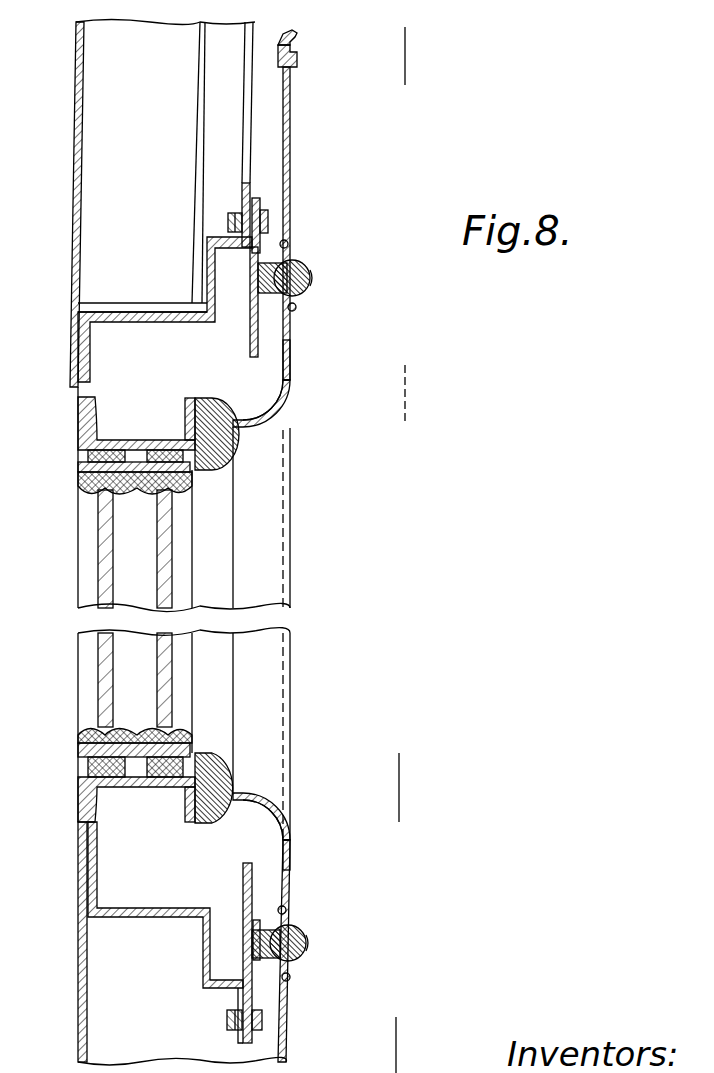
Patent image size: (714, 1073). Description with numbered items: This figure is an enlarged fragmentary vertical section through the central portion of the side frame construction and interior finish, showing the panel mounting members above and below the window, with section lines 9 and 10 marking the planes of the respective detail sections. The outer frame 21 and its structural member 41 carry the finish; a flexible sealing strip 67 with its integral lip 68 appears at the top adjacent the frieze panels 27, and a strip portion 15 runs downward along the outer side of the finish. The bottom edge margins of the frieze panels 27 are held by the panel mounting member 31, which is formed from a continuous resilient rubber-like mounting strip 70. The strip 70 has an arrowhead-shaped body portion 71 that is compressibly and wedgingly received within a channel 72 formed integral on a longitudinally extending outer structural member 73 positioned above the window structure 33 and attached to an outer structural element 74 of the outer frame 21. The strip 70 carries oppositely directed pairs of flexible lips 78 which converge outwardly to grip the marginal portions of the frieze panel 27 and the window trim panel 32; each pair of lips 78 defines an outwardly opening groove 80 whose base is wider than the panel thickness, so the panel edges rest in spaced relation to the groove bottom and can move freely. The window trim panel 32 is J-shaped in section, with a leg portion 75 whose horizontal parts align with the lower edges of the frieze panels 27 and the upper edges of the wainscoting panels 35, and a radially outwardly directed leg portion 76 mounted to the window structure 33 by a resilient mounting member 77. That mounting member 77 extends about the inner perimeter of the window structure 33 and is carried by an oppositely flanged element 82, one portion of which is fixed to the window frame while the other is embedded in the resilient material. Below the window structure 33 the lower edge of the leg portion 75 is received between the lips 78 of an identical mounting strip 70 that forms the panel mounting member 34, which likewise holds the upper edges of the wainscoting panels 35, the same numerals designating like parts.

The section line 9- 9 is at (374, 51).
The section line 10- 10 is at (365, 763).
The curved strip portion 15 is at (291, 366).
The outer frame 21 is at (74, 170).
The frieze panels 27 is at (291, 153).
The panel mounting member 31 is at (345, 235).
The window trim panels 32 is at (278, 498).
The window structure 33 is at (165, 536).
The panel mounting member 34 is at (333, 918).
The wainscoting panels 35 is at (288, 1015).
The structural member 41 is at (193, 143).
The resilient mounting and sealing member 67 is at (297, 59).
The flexible lip 68 is at (296, 33).
The mounting strip 70 is at (310, 272).
The body portion 71 is at (265, 278).
The channel 72 is at (263, 258).
The outer structural member 73 is at (250, 338).
The outer structural element 74 is at (138, 322).
The leg portion 75 is at (291, 845).
The leg portion 76 is at (251, 418).
The resilient mounting member 77 is at (222, 397).
The flexible lips 78 is at (286, 242).
The groove 80 is at (309, 288).
The oppositely flanged element 82 is at (190, 413).